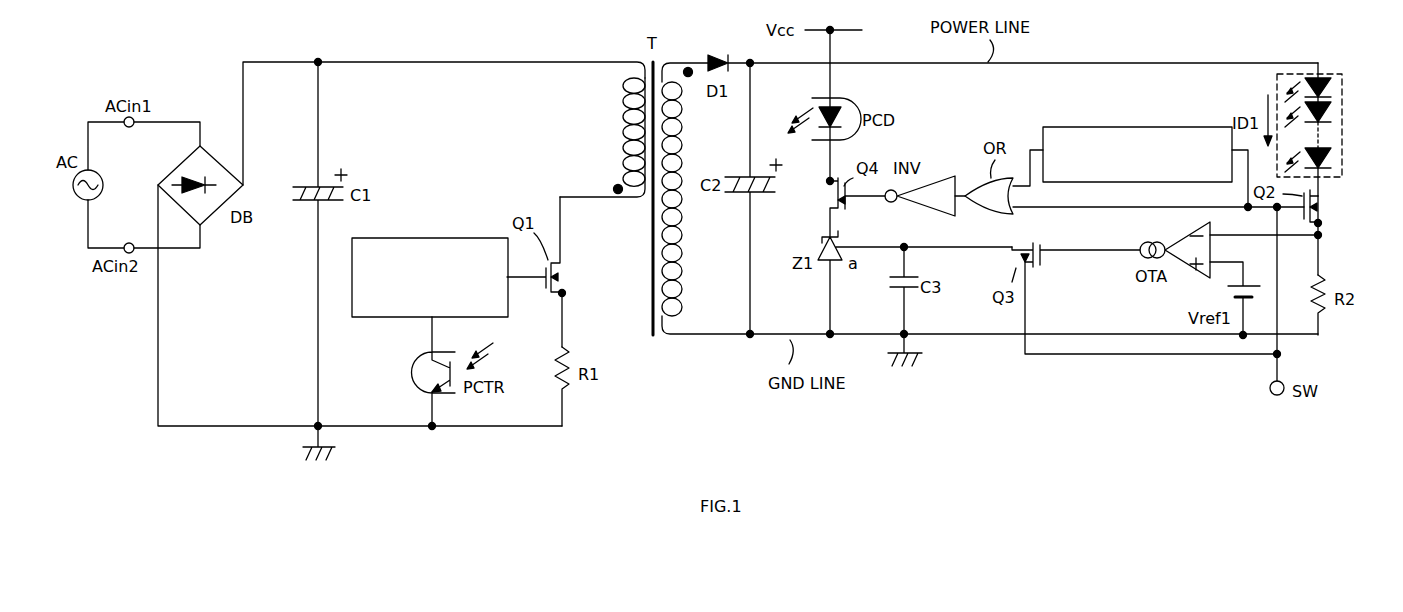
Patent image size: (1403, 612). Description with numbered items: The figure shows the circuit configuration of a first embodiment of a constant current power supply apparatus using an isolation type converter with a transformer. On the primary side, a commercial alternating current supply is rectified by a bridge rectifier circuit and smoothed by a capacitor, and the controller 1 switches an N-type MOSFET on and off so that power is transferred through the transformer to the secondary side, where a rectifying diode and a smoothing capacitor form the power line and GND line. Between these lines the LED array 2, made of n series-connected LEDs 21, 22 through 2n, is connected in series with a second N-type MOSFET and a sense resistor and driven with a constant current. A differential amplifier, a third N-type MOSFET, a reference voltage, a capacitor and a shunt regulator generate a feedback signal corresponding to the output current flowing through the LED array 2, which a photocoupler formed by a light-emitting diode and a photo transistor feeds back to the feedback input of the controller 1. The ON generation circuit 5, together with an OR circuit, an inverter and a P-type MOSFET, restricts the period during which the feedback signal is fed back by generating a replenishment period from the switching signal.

The controller 1 is at (396, 238).
The LED array 2 is at (1309, 129).
The LED 21 is at (1333, 86).
The LED 22 is at (1333, 111).
The LED 2n is at (1333, 160).
The ON generation circuit 5 is at (1150, 127).